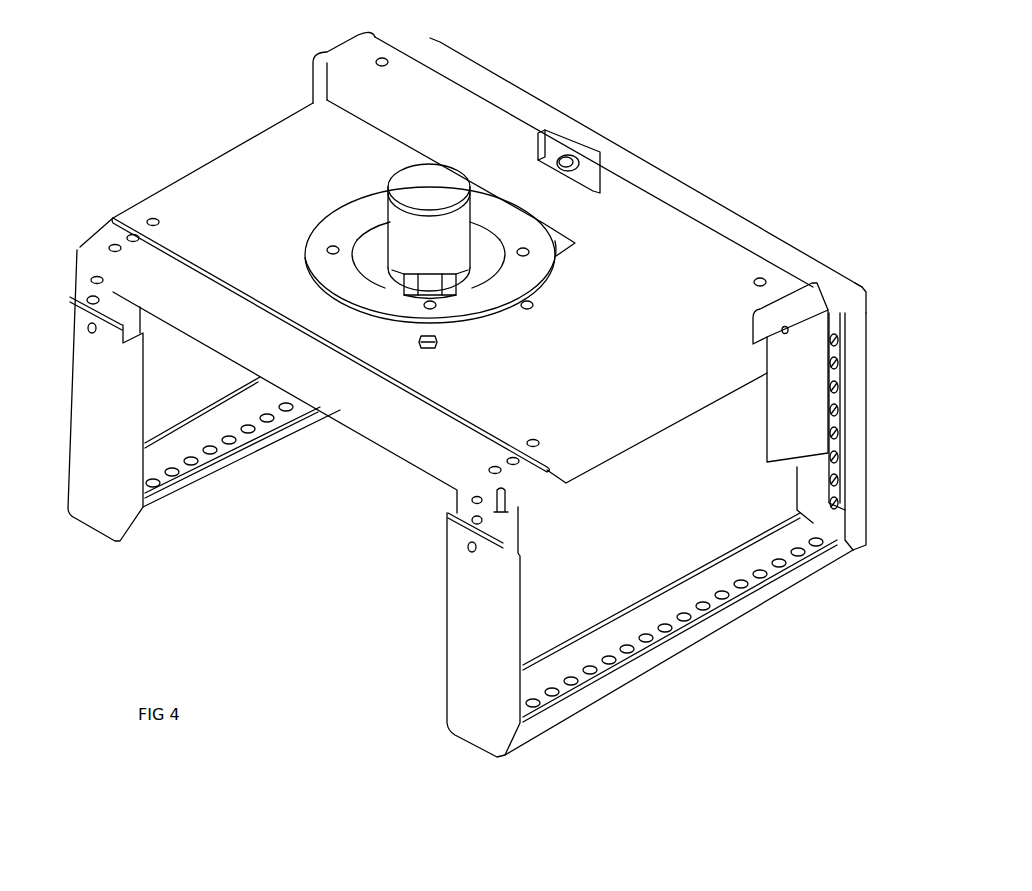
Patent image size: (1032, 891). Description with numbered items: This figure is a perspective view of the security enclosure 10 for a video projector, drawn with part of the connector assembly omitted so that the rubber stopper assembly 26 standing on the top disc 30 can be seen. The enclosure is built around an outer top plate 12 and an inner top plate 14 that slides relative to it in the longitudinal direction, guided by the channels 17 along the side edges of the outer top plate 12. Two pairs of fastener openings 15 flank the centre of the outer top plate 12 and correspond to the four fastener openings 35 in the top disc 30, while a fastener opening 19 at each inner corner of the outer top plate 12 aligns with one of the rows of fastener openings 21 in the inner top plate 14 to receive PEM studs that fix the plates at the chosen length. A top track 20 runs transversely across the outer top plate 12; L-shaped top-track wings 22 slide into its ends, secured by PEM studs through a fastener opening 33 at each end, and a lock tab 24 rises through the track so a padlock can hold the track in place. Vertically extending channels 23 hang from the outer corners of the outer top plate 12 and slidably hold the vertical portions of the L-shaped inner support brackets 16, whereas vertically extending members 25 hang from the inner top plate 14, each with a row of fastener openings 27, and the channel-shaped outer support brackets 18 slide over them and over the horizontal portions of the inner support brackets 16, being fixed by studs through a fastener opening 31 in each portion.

The security enclosure 10 is at (737, 86).
The outer top plate 12 is at (694, 197).
The inner top plate 14 is at (336, 423).
The fastener openings 15 is at (519, 320).
The inner support brackets 16 is at (849, 531).
The channels 17 is at (849, 313).
The outer support brackets 18 is at (91, 503).
The fastener opening 19 is at (149, 215).
The top track 20 is at (729, 273).
The fastener openings 21 is at (110, 242).
The top-track wings 22 is at (336, 41).
The vertically extending channels 23 is at (853, 444).
The lock tab 24 is at (584, 164).
The vertically extending members 25 is at (80, 277).
The rubber stopper assembly 26 is at (408, 238).
The fastener openings 27 is at (88, 298).
The top disc 30 is at (333, 290).
The fastener opening 31 is at (87, 337).
The fastener opening 33 is at (389, 57).
The fastener openings 35 is at (327, 249).